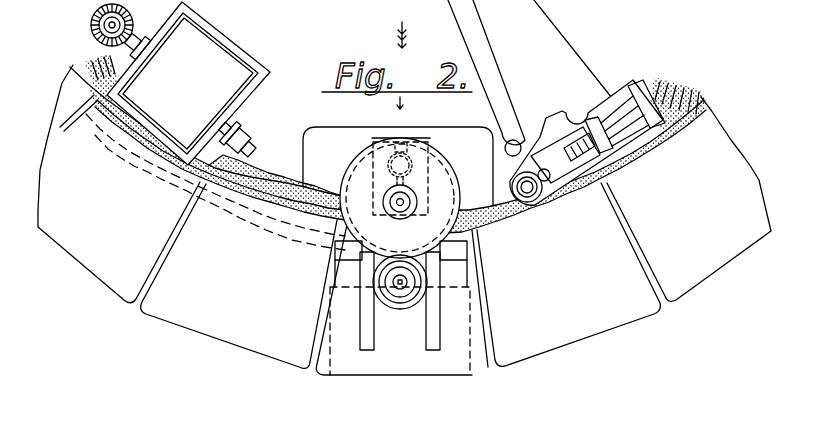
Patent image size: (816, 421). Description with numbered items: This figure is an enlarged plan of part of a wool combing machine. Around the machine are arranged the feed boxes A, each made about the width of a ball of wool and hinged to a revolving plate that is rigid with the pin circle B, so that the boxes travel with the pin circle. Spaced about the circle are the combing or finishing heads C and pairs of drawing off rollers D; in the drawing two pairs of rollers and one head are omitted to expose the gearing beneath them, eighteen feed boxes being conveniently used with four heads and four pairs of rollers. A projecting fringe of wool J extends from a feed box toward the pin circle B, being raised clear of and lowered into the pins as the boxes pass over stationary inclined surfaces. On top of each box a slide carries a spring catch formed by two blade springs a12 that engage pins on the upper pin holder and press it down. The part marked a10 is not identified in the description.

The feed boxes A is at (312, 383).
The pin circle B is at (505, 218).
The combing or finishing heads C is at (237, 42).
The drawing off rollers D is at (550, 205).
The projecting fringe of wool J is at (674, 96).
The pressing roller a10 is at (430, 182).
The blade springs a12 is at (399, 305).